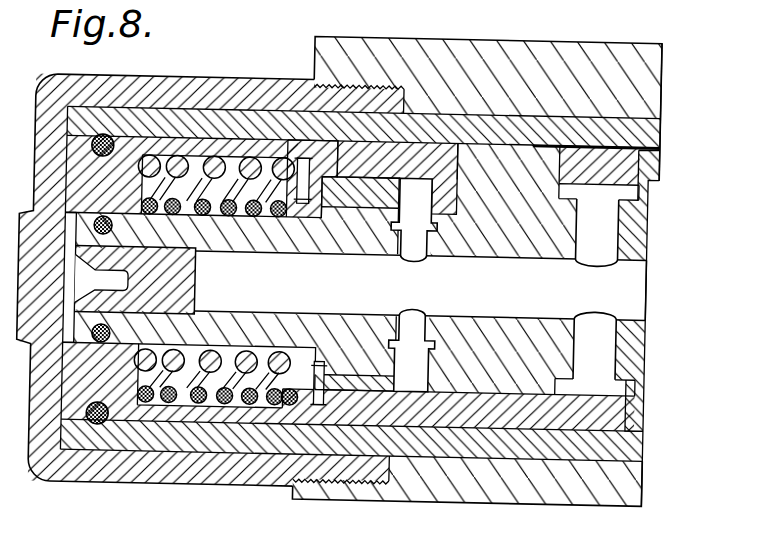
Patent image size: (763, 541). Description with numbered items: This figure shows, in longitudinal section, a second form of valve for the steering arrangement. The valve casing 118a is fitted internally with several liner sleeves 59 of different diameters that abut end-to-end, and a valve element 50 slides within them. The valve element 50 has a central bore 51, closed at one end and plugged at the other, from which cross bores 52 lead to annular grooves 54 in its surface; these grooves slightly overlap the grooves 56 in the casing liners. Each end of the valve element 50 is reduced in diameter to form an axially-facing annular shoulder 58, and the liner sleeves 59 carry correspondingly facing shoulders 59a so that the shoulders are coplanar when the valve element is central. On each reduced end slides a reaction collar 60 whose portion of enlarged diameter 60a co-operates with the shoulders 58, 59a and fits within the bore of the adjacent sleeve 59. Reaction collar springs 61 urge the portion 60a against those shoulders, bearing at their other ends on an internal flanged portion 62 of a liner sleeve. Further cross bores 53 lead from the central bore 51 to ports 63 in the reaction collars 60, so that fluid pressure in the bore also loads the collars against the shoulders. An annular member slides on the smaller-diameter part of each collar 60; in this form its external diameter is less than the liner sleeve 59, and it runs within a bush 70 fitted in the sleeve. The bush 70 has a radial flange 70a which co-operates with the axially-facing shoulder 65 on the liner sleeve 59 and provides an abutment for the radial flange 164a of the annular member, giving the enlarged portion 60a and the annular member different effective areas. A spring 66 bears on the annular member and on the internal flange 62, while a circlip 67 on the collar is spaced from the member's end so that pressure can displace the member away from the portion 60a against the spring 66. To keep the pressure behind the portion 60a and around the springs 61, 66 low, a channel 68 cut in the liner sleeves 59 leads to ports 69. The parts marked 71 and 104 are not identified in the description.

The valve element 50 is at (557, 327).
The central bore 51 is at (201, 302).
The cross bores 52 is at (592, 268).
The cross bores 53 is at (415, 250).
The annular grooves 54 is at (553, 240).
The grooves 56 is at (637, 270).
The annular shoulder 58 is at (490, 215).
The liner sleeves 59 is at (213, 110).
The shoulders 59a is at (533, 427).
The reaction collar 60 is at (313, 217).
The portion of enlarged diameter 60a is at (458, 222).
The reaction collar springs 61 is at (182, 405).
The internal flanged portion 62 is at (128, 147).
The ports 63 is at (372, 330).
The axially-facing shoulder 65 is at (390, 440).
The spring 66 is at (147, 403).
The circlip 67 is at (233, 432).
The channel 68 is at (550, 147).
The ports 69 is at (456, 155).
The bush 70 is at (325, 135).
The radial flange 70a is at (330, 160).
The guide member 71 is at (310, 353).
The wall 104 is at (420, 440).
The valve casing 118a is at (627, 72).
The radial flange 164a is at (288, 410).